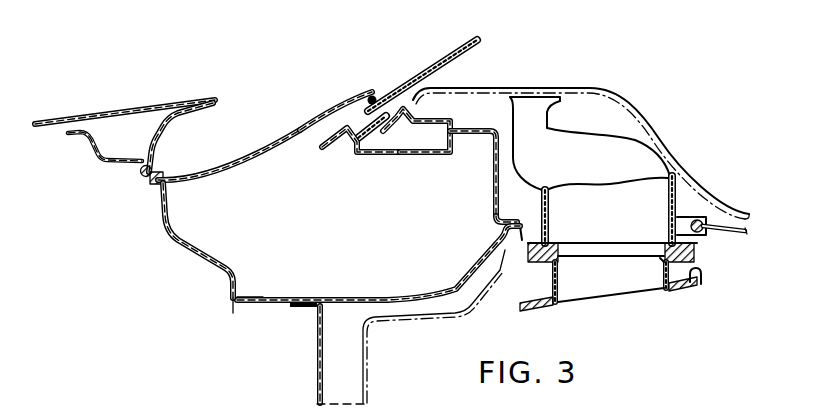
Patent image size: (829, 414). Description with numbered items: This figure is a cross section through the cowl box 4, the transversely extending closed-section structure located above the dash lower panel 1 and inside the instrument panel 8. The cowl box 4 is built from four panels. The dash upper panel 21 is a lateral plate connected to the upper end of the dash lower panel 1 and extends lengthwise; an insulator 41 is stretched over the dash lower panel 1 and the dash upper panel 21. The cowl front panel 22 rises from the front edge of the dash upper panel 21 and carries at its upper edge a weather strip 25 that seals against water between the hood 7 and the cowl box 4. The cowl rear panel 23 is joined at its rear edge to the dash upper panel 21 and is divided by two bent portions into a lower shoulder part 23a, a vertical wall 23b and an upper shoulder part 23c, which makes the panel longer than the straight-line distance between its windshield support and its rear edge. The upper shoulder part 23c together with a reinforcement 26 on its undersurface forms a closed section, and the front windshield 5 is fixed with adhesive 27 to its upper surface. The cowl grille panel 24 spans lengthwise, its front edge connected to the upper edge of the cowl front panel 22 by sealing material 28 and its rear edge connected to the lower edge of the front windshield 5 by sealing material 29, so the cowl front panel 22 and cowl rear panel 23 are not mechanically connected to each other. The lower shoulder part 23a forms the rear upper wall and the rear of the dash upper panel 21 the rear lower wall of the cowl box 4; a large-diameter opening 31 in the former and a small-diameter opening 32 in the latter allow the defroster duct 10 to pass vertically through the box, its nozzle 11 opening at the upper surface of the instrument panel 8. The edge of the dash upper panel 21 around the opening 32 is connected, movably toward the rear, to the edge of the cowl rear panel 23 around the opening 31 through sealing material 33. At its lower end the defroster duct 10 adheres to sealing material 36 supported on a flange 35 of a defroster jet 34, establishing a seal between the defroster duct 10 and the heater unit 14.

The dash lower panel 1 is at (315, 368).
The cowl box 4 is at (293, 173).
The front windshield 5 is at (453, 50).
The hood 7 is at (127, 108).
The instrument panel 8 is at (650, 127).
The defroster duct 10 is at (678, 187).
The nozzle 11 is at (557, 94).
The heater unit 14 is at (693, 274).
The dash upper panel 21 is at (365, 298).
The cowl front panel 22 is at (210, 263).
The cowl rear panel 23 is at (490, 130).
The lower shoulder part 23a is at (497, 220).
The vertical wall 23b is at (493, 183).
The upper shoulder part 23c is at (443, 113).
The cowl grille panel 24 is at (320, 118).
The weather strip 25 is at (133, 172).
The reinforcement 26 is at (383, 153).
The adhesive 27 is at (387, 102).
The sealing material 28 is at (153, 177).
The sealing material 29 is at (377, 97).
The opening 31 is at (688, 217).
The opening 32 is at (694, 238).
The sealing material 33 is at (535, 246).
The defroster jet 34 is at (610, 287).
The flange 35 is at (700, 263).
The sealing material 36 is at (652, 258).
The insulator 41 is at (393, 322).